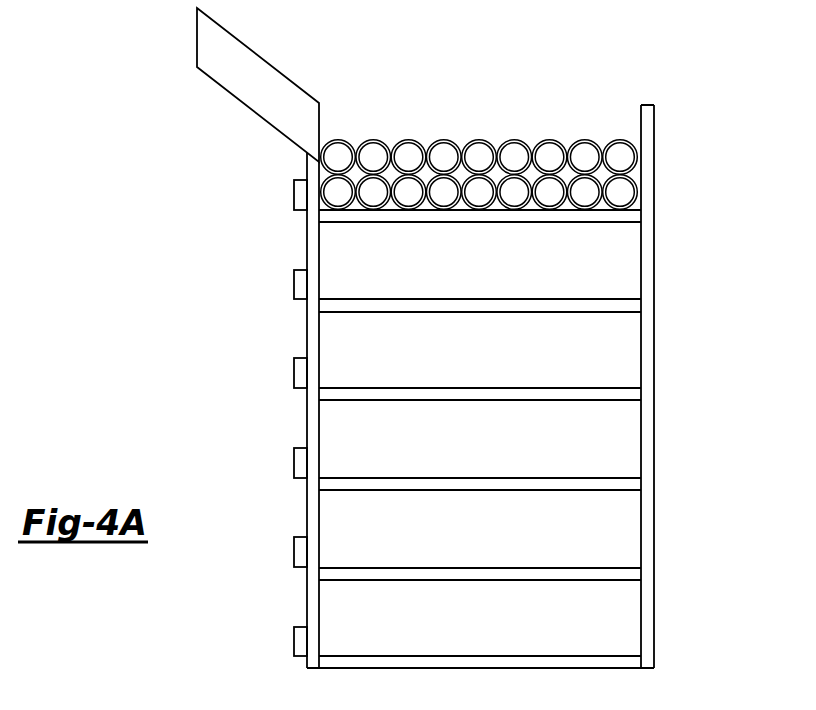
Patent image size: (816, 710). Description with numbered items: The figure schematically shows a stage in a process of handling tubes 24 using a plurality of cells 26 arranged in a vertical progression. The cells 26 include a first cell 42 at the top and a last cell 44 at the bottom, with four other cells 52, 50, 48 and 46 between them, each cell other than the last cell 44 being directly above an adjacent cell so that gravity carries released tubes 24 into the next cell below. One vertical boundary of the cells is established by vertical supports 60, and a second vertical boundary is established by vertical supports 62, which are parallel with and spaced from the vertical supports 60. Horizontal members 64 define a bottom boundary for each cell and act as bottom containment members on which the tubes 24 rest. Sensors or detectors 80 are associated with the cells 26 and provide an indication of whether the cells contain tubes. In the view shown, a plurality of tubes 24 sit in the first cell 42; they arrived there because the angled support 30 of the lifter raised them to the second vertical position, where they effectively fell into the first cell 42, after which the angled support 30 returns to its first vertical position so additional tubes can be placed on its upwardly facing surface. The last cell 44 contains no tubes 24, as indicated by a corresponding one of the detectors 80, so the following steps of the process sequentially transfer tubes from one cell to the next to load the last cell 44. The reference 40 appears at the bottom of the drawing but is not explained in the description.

The tubes 24 is at (517, 140).
The plurality of cells 26 is at (651, 91).
The angled support 30 is at (258, 55).
The base 40 is at (231, 706).
The first cell 42 is at (480, 145).
The last cell 44 is at (610, 603).
The cell 46 is at (610, 515).
The cell 48 is at (610, 425).
The cell 50 is at (610, 337).
The cell 52 is at (610, 248).
The vertical supports 60 is at (322, 344).
The vertical supports 62 is at (638, 268).
The horizontal members 64 is at (446, 215).
The sensors or detectors 80 is at (298, 202).